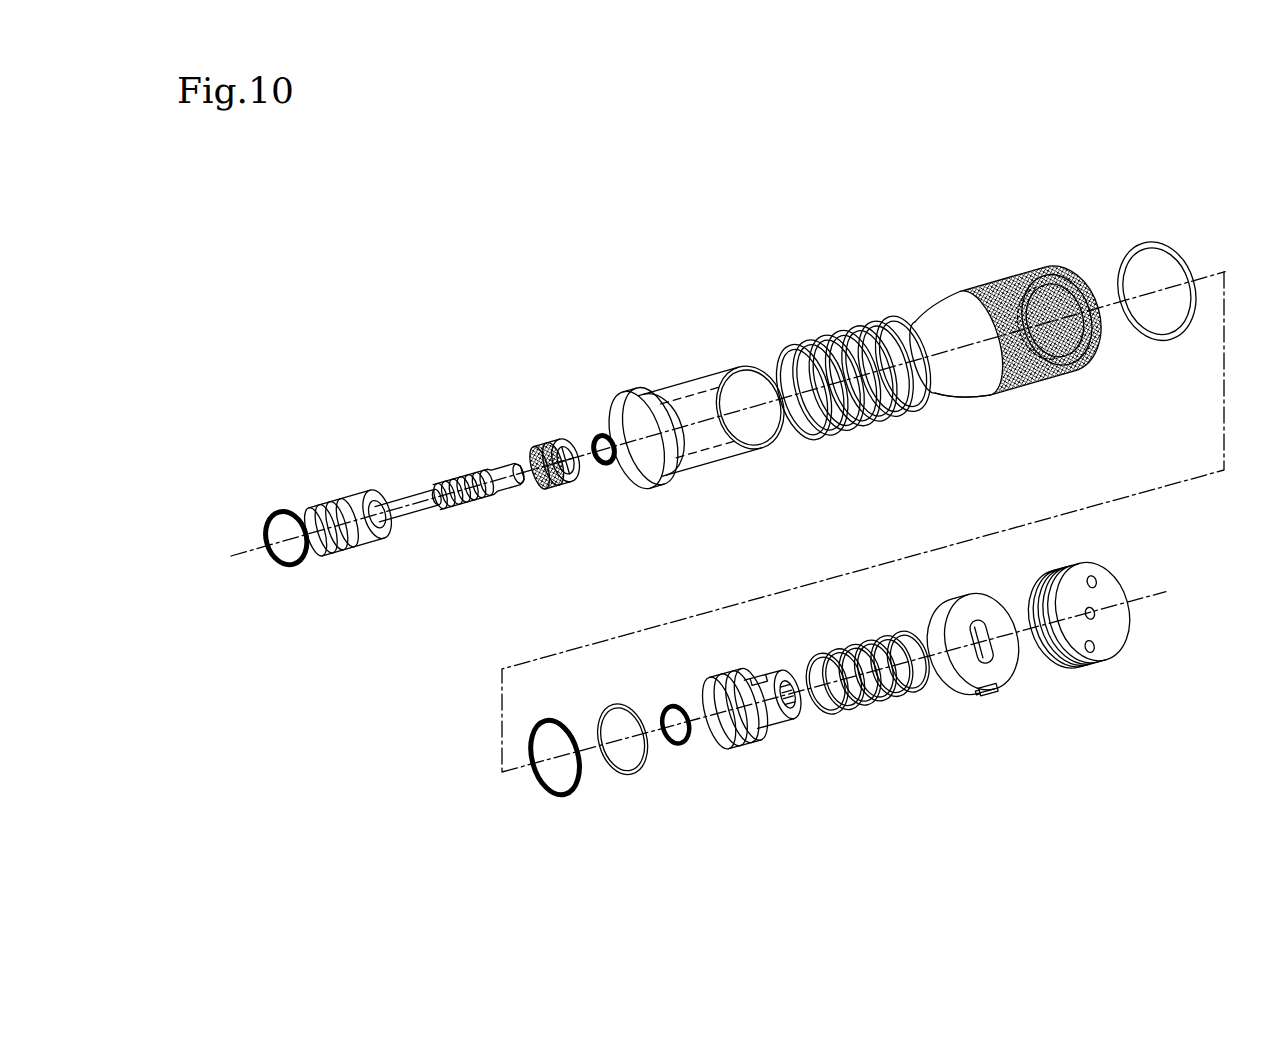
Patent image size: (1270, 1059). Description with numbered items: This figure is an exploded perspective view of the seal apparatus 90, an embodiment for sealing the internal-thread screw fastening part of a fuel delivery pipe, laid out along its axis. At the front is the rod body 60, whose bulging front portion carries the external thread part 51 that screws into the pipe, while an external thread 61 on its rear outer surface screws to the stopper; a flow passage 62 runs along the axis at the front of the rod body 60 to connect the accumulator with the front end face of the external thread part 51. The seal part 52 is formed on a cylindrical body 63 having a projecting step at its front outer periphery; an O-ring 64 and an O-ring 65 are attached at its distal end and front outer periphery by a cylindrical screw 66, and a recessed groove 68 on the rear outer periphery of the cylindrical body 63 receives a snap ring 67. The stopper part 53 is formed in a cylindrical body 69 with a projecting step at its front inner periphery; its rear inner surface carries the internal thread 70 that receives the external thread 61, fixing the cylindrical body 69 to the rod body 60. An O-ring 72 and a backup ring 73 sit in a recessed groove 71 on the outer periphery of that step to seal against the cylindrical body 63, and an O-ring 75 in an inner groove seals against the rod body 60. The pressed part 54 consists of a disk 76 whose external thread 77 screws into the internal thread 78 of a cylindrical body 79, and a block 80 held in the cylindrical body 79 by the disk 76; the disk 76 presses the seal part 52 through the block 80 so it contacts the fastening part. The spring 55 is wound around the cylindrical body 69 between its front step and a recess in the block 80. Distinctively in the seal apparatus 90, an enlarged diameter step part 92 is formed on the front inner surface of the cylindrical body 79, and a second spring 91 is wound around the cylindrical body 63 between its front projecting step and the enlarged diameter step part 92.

The external thread part 51 is at (353, 494).
The seal part 52 is at (696, 415).
The stopper part 53 is at (761, 710).
The pressed part 54 is at (989, 675).
The spring 55 is at (876, 706).
The rod body 60 is at (451, 479).
The external thread 61 is at (482, 498).
The flow passage 62 is at (426, 512).
The cylindrical body 63 is at (664, 398).
The O-ring 64 is at (284, 511).
The O-ring 65 is at (606, 466).
The cylindrical screw 66 is at (548, 436).
The snap ring 67 is at (1160, 252).
The recessed groove 68 is at (750, 452).
The cylindrical body 69 is at (765, 662).
The internal thread 70 is at (800, 710).
The recessed groove 71 is at (727, 676).
The O-ring 72 is at (548, 796).
The backup ring 73 is at (624, 776).
The O-ring 75 is at (679, 745).
The disk 76 is at (1100, 637).
The external thread 77 is at (1090, 664).
The internal thread 78 is at (1075, 278).
The cylindrical body 79 is at (1006, 323).
The block 80 is at (972, 692).
The seal apparatus 90 is at (679, 340).
The second spring 91 is at (836, 320).
The enlarged diameter step part 92 is at (934, 396).